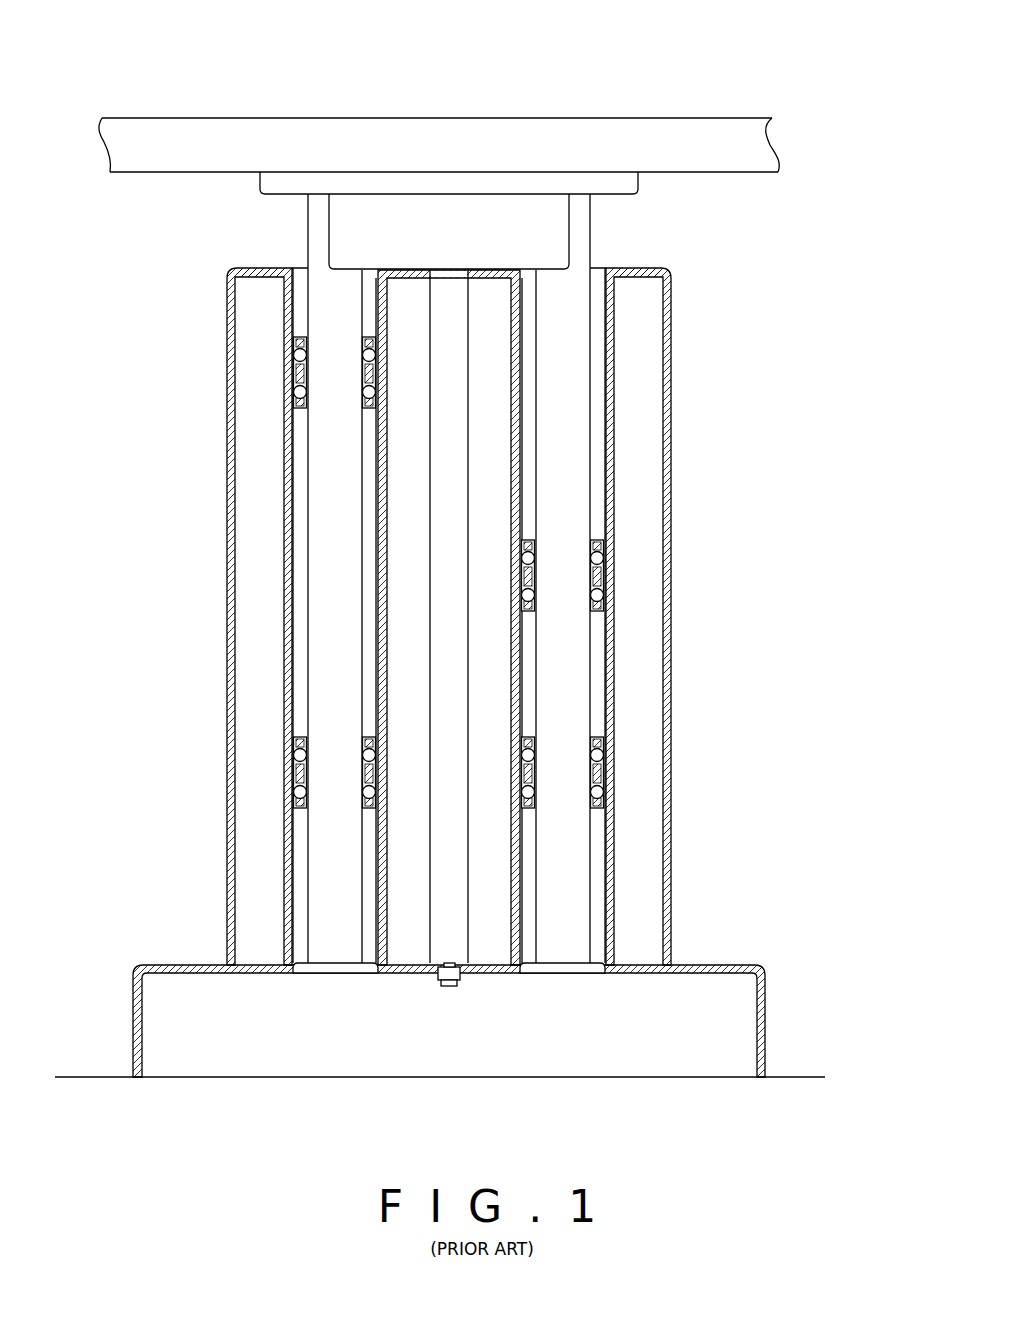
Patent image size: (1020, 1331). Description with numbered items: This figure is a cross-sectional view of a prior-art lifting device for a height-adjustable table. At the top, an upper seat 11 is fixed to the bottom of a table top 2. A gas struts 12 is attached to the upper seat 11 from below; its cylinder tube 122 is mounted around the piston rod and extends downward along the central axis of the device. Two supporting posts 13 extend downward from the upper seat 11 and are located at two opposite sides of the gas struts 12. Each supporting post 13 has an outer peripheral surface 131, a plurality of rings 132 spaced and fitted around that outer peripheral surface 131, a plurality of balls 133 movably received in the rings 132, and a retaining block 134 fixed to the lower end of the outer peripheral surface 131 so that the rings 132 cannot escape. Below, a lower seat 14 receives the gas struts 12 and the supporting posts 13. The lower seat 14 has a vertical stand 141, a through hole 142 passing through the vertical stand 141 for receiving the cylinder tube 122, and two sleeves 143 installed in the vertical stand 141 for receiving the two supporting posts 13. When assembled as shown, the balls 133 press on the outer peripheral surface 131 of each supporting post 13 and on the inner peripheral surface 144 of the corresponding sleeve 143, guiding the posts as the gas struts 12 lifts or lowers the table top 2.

The table top 2 is at (242, 118).
The upper seat 11 is at (445, 163).
The gas struts 12 is at (426, 936).
The cylinder tube 122 is at (438, 877).
The supporting posts 13 is at (300, 896).
The outer peripheral surface 131 is at (307, 513).
The rings 132 is at (296, 378).
The balls 133 is at (295, 345).
The retaining block 134 is at (322, 968).
The lower seat 14 is at (691, 1091).
The vertical stand 141 is at (672, 838).
The through hole 142 is at (430, 277).
The sleeves 143 is at (282, 300).
The inner peripheral surface 144 is at (301, 275).